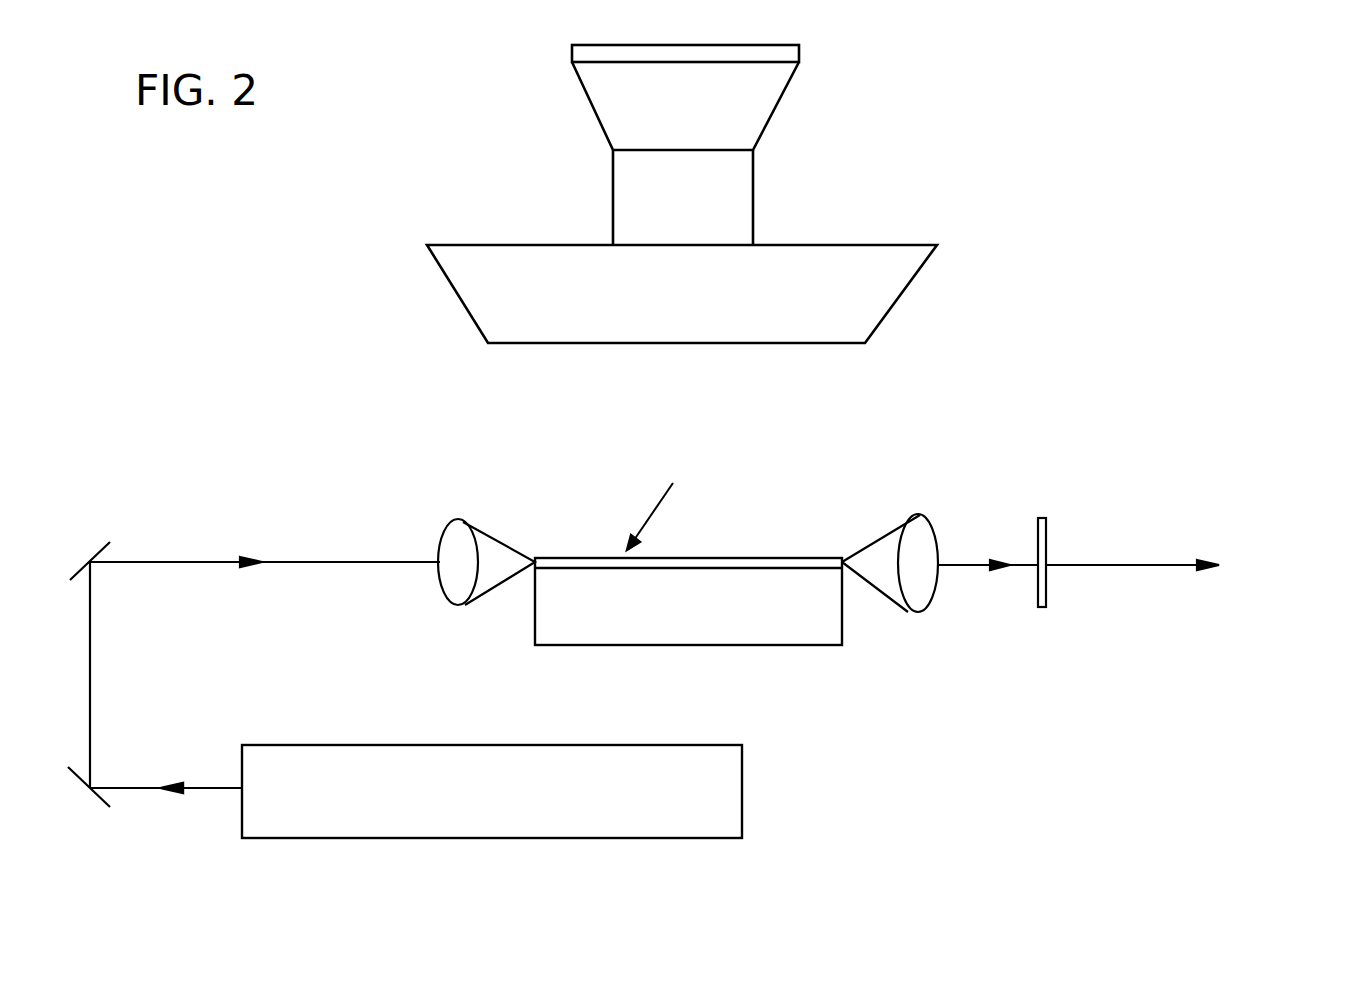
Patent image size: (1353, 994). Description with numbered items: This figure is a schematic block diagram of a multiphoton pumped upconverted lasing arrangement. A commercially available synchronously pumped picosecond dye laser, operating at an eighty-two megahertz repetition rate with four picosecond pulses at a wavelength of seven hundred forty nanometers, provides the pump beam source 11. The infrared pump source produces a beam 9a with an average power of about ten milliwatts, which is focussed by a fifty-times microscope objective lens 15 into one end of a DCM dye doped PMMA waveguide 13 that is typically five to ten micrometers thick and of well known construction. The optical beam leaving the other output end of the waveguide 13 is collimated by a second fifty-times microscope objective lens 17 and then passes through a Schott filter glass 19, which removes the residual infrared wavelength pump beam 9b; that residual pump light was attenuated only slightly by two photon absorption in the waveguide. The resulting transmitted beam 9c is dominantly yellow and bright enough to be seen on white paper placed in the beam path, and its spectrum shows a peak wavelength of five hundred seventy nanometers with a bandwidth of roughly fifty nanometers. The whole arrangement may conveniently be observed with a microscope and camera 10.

The microscope and camera 10 is at (859, 202).
The beam 9a is at (338, 563).
The microscope objective lens 15 is at (492, 538).
The DCM dye doped PMMA waveguide 13 is at (730, 558).
The microscope objective lens 17 is at (888, 530).
The residual infrared wavelength pump beam 9b is at (963, 570).
The Schott filter glass 19 is at (1045, 550).
The transmitted beam 9c is at (1150, 565).
The pump beam source 11 is at (742, 788).